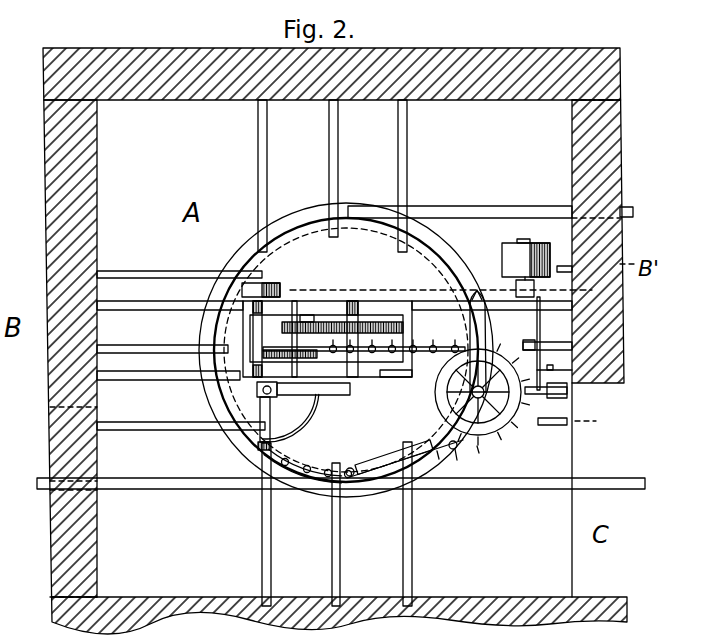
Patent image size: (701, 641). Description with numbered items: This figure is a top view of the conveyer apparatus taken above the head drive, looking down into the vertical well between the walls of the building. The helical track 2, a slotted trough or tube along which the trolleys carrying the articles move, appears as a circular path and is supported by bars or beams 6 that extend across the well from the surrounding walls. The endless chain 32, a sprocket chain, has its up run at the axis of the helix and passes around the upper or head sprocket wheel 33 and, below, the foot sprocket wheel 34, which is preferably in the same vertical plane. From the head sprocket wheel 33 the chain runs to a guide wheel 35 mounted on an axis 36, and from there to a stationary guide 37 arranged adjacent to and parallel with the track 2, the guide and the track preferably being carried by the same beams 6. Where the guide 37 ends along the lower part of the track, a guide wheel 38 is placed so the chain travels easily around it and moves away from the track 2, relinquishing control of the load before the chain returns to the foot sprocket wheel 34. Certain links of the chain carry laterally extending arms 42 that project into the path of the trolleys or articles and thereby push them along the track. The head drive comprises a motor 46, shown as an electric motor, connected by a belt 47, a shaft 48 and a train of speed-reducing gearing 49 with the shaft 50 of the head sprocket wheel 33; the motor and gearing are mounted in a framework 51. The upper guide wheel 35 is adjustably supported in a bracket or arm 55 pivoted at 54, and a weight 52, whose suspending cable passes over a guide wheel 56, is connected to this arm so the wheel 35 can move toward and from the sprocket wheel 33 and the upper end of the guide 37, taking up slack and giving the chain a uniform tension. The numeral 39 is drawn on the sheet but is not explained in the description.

The track 2 is at (235, 447).
The bars or beams 6 is at (339, 163).
The endless chain 32 is at (298, 460).
The head sprocket wheel 33 is at (360, 353).
The foot sprocket wheel 34 is at (311, 318).
The guide wheel 35 is at (498, 418).
The axis 36 is at (482, 400).
The stationary guide 37 is at (374, 465).
The guide wheel 38 is at (301, 420).
The pivot bracket 39 is at (258, 391).
The laterally extending arms 42 is at (441, 453).
The motor 46 is at (502, 252).
The belt 47 is at (378, 291).
The shaft 48 is at (262, 325).
The train of speed-reducing gearing 49 is at (328, 320).
The shaft 50 is at (355, 318).
The framework 51 is at (399, 375).
The weight 52 is at (568, 393).
The pivot 54 is at (476, 289).
The bracket or arm 55 is at (485, 338).
The guide wheel 56 is at (568, 408).